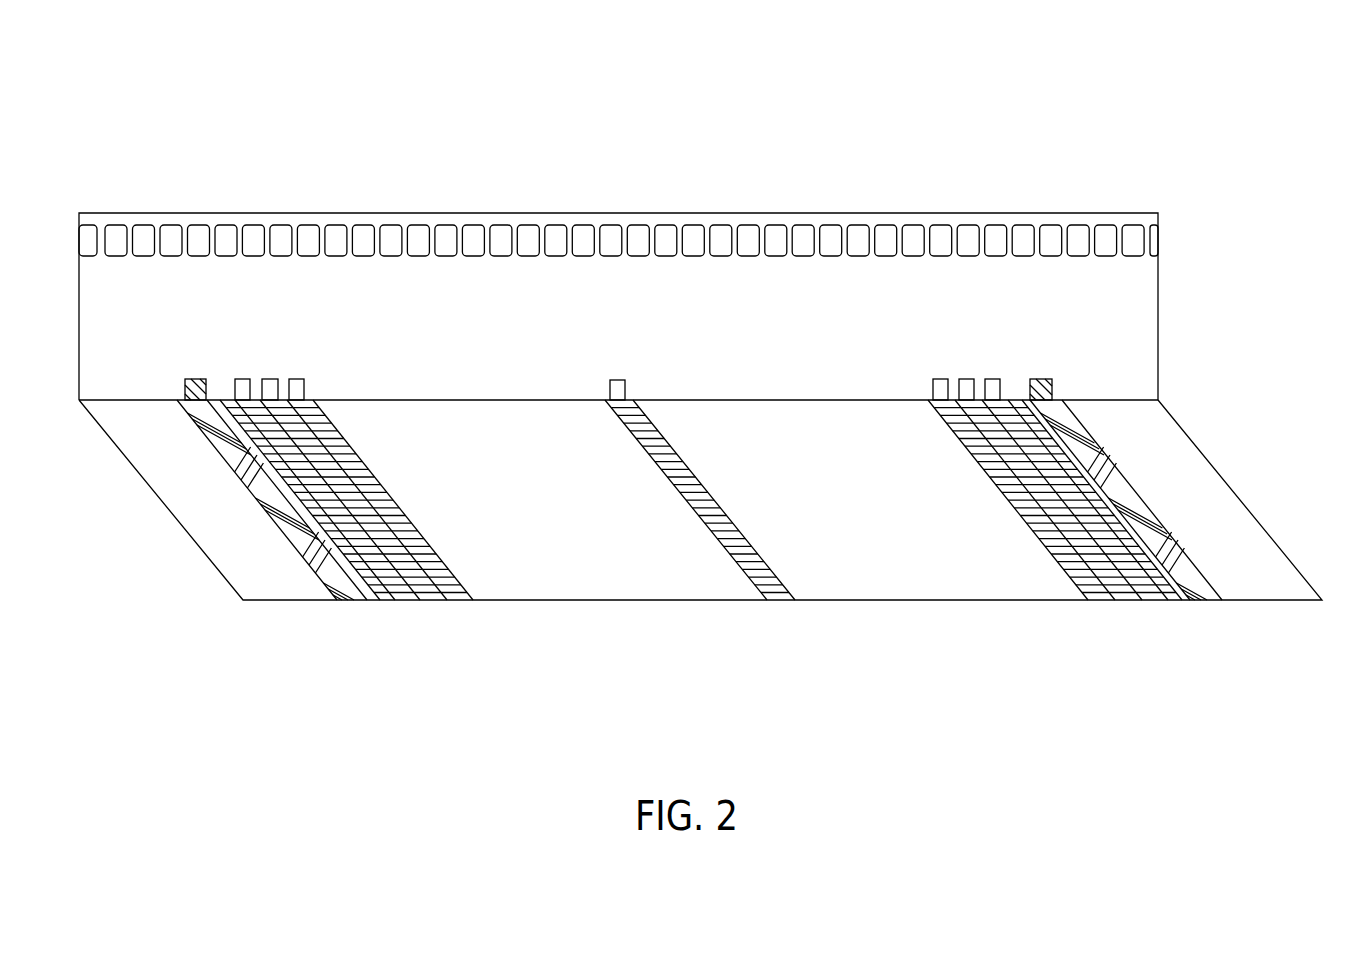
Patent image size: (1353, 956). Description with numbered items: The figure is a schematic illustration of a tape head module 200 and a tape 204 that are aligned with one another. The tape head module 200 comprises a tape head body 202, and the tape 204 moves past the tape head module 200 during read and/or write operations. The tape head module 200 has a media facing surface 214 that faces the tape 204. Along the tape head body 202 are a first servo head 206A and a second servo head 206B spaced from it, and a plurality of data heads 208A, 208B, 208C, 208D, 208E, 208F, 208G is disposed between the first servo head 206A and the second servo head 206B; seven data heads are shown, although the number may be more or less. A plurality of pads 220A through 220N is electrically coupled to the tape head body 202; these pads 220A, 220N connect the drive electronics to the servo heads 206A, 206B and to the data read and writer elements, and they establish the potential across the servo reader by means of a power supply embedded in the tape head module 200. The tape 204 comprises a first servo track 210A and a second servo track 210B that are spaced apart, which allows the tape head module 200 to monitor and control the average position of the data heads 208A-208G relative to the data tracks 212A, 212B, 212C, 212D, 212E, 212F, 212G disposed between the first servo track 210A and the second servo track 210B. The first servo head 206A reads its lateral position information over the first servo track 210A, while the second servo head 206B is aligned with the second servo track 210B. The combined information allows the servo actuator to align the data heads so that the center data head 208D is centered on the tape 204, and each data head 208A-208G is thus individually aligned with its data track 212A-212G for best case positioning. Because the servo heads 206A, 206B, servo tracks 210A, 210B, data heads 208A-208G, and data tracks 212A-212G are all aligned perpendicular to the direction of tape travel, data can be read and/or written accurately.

The tape head module 200 is at (190, 60).
The tape head body 202 is at (1158, 293).
The tape 204 is at (1242, 498).
The first servo head 206A is at (197, 378).
The second servo head 206B is at (1040, 378).
The data head 208A is at (243, 378).
The data head 208B is at (270, 378).
The data head 208C is at (297, 378).
The center data head 208D is at (617, 378).
The data head 208E is at (940, 378).
The data head 208F is at (966, 378).
The data head 208G is at (992, 378).
The first servo track 210A is at (365, 602).
The second servo track 210B is at (1205, 602).
The data track 212A is at (410, 602).
The data track 212B is at (437, 602).
The data track 212C is at (472, 602).
The data track 212D is at (782, 602).
The data track 212E is at (1107, 602).
The data track 212F is at (1135, 602).
The data track 212G is at (1162, 602).
The media facing surface 214 is at (1109, 399).
The pad 220A is at (172, 222).
The pad 220N is at (1080, 222).